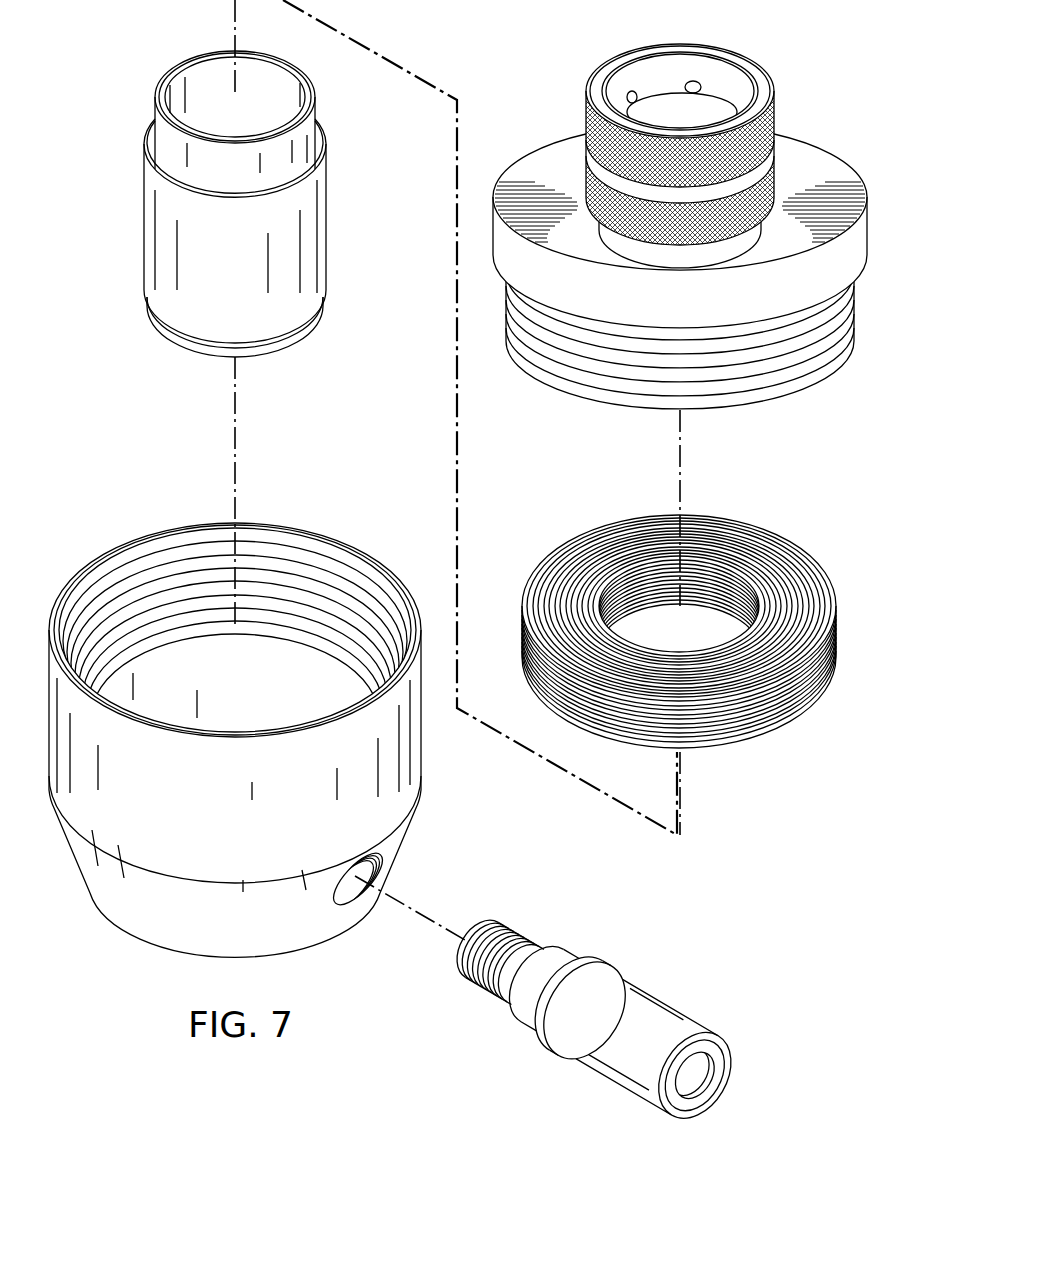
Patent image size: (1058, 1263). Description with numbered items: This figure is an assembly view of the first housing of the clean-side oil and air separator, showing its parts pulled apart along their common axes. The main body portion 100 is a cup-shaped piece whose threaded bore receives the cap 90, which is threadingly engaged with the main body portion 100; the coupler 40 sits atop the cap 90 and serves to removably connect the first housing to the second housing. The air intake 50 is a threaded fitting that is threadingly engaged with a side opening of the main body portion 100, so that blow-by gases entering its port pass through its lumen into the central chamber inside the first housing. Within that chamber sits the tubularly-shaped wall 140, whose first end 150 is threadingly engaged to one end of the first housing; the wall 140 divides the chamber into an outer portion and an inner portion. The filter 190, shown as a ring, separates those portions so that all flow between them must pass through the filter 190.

The coupler 40 is at (778, 65).
The air intake 50 is at (593, 1015).
The cap 90 is at (549, 143).
The main body portion 100 is at (418, 758).
The tubularly-shaped wall 140 is at (146, 217).
The first end of wall 150 is at (193, 356).
The filter 190 is at (768, 731).